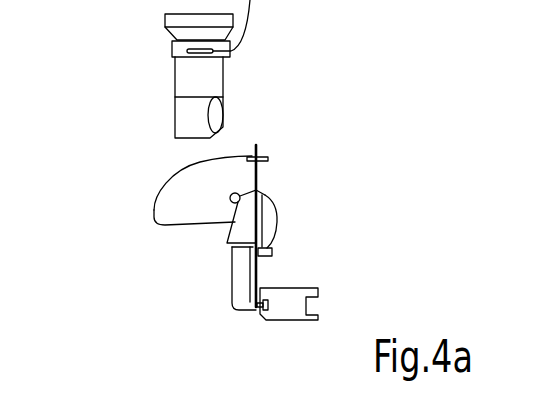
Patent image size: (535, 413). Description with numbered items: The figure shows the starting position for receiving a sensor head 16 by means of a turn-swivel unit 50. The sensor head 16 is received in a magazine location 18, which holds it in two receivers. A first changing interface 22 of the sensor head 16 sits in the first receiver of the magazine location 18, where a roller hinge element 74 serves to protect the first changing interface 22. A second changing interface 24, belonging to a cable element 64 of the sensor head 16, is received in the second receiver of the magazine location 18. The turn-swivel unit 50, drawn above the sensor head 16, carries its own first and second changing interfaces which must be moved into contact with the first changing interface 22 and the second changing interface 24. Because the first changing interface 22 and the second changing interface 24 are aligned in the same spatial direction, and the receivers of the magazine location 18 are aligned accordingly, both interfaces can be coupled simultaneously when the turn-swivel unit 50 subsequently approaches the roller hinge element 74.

The turn-swivel unit 50 is at (152, 98).
The second changing interface 24 is at (270, 143).
The first changing interface 22 is at (266, 214).
The roller hinge element 74 is at (280, 227).
The magazine location 18 is at (332, 243).
The cable element 64 is at (152, 217).
The sensor head 16 is at (233, 282).